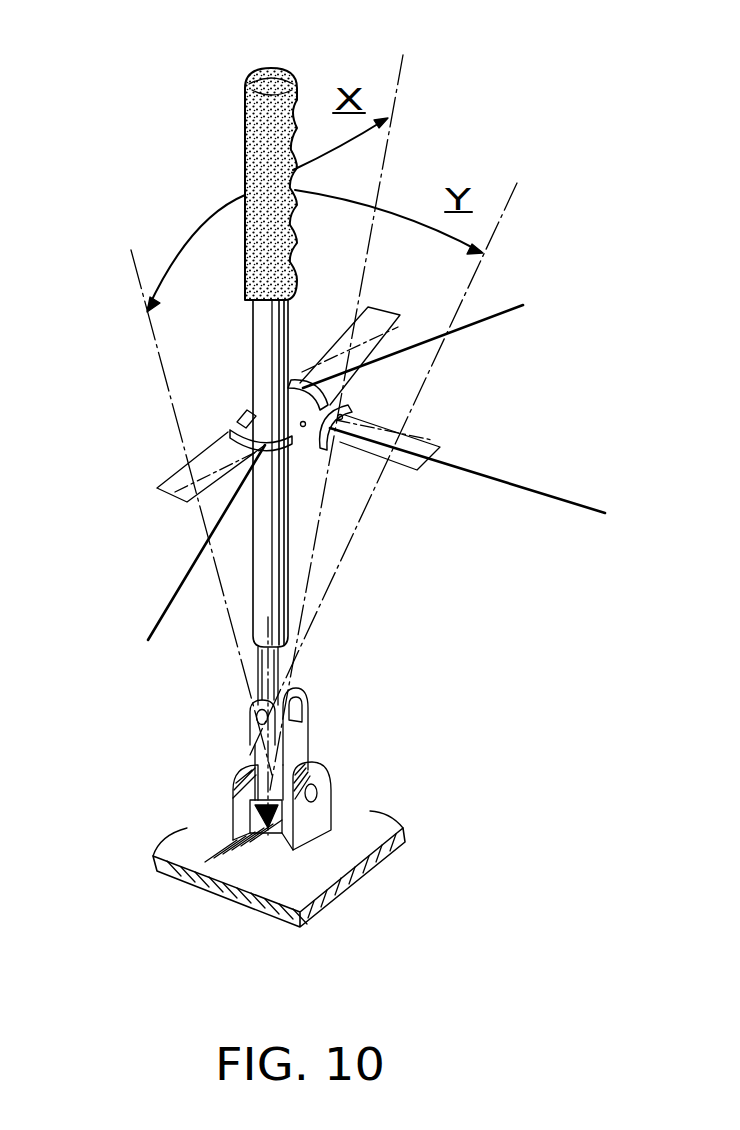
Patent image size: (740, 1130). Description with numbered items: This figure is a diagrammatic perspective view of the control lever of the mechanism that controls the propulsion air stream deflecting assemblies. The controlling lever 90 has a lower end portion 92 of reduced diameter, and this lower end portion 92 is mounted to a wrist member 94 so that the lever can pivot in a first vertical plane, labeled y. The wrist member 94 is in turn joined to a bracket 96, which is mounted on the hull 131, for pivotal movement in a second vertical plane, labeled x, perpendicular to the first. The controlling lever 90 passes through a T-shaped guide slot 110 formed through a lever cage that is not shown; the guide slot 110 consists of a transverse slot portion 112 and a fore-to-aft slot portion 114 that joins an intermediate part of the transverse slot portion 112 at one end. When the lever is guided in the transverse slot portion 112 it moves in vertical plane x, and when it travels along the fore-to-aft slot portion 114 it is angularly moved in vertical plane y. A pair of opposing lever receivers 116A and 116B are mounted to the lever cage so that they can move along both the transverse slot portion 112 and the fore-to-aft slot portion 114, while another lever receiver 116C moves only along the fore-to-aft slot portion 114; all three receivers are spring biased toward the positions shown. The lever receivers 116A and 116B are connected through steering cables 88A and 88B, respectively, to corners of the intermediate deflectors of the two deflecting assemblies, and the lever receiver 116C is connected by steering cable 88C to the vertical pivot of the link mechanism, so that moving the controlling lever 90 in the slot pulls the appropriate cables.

The controlling lever 90 is at (267, 67).
The lower end portion 92 is at (258, 670).
The wrist member 94 is at (297, 737).
The bracket 96 is at (320, 790).
The guide slot 110 is at (174, 484).
The transverse slot portion 112 is at (244, 418).
The fore-to-aft slot portion 114 is at (353, 447).
The lever receiver 116A is at (226, 432).
The lever receiver 116B is at (308, 378).
The lever receiver 116C is at (345, 405).
The steering cable 88A is at (167, 604).
The steering cable 88B is at (473, 330).
The steering cable 88C is at (527, 488).
The hull 131 is at (327, 860).